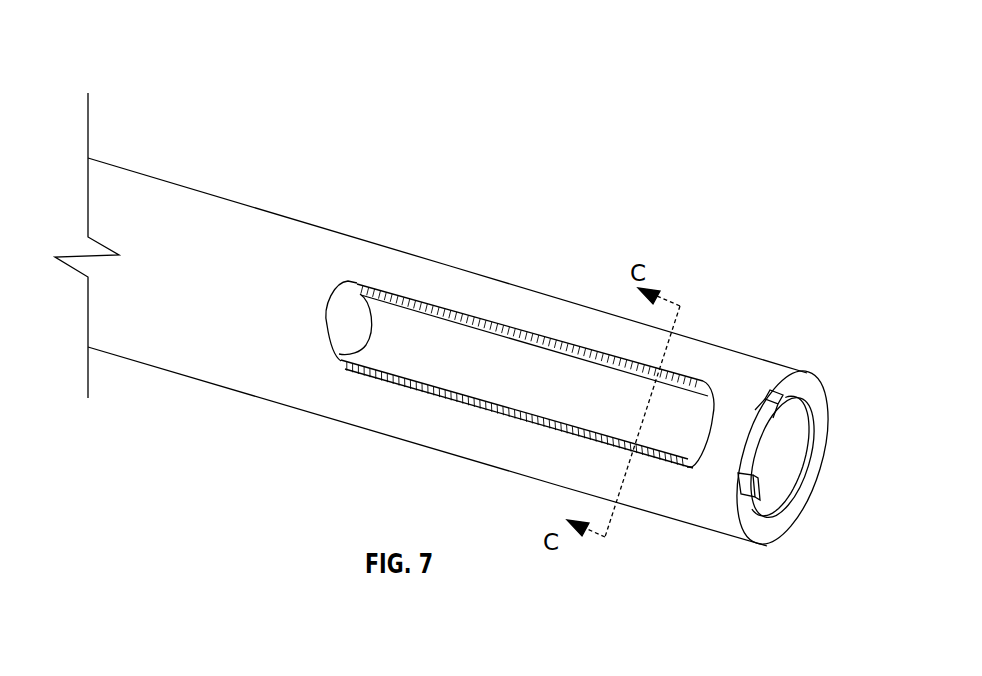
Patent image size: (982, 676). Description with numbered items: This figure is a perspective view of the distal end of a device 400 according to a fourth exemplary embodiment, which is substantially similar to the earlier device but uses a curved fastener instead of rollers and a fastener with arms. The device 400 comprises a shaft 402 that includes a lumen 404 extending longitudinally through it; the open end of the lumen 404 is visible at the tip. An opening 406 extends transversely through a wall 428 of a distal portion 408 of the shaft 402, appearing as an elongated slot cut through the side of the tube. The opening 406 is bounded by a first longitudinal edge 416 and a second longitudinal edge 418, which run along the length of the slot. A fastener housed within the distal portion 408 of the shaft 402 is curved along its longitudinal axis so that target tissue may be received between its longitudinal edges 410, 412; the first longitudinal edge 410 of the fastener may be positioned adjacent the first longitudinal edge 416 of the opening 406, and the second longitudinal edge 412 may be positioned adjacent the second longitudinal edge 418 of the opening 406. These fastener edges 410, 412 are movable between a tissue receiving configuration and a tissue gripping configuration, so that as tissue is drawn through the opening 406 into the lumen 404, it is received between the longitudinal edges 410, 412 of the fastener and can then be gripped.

The device 400 is at (375, 112).
The shaft 402 is at (228, 223).
The lumen 404 is at (795, 385).
The opening 406 is at (340, 278).
The distal portion 408 is at (555, 298).
The first longitudinal edge of the fastener 410 is at (403, 355).
The second longitudinal edge of the fastener 412 is at (493, 332).
The first longitudinal edge of the opening 416 is at (430, 392).
The second longitudinal edge of the opening 418 is at (457, 308).
The wall 428 is at (703, 500).